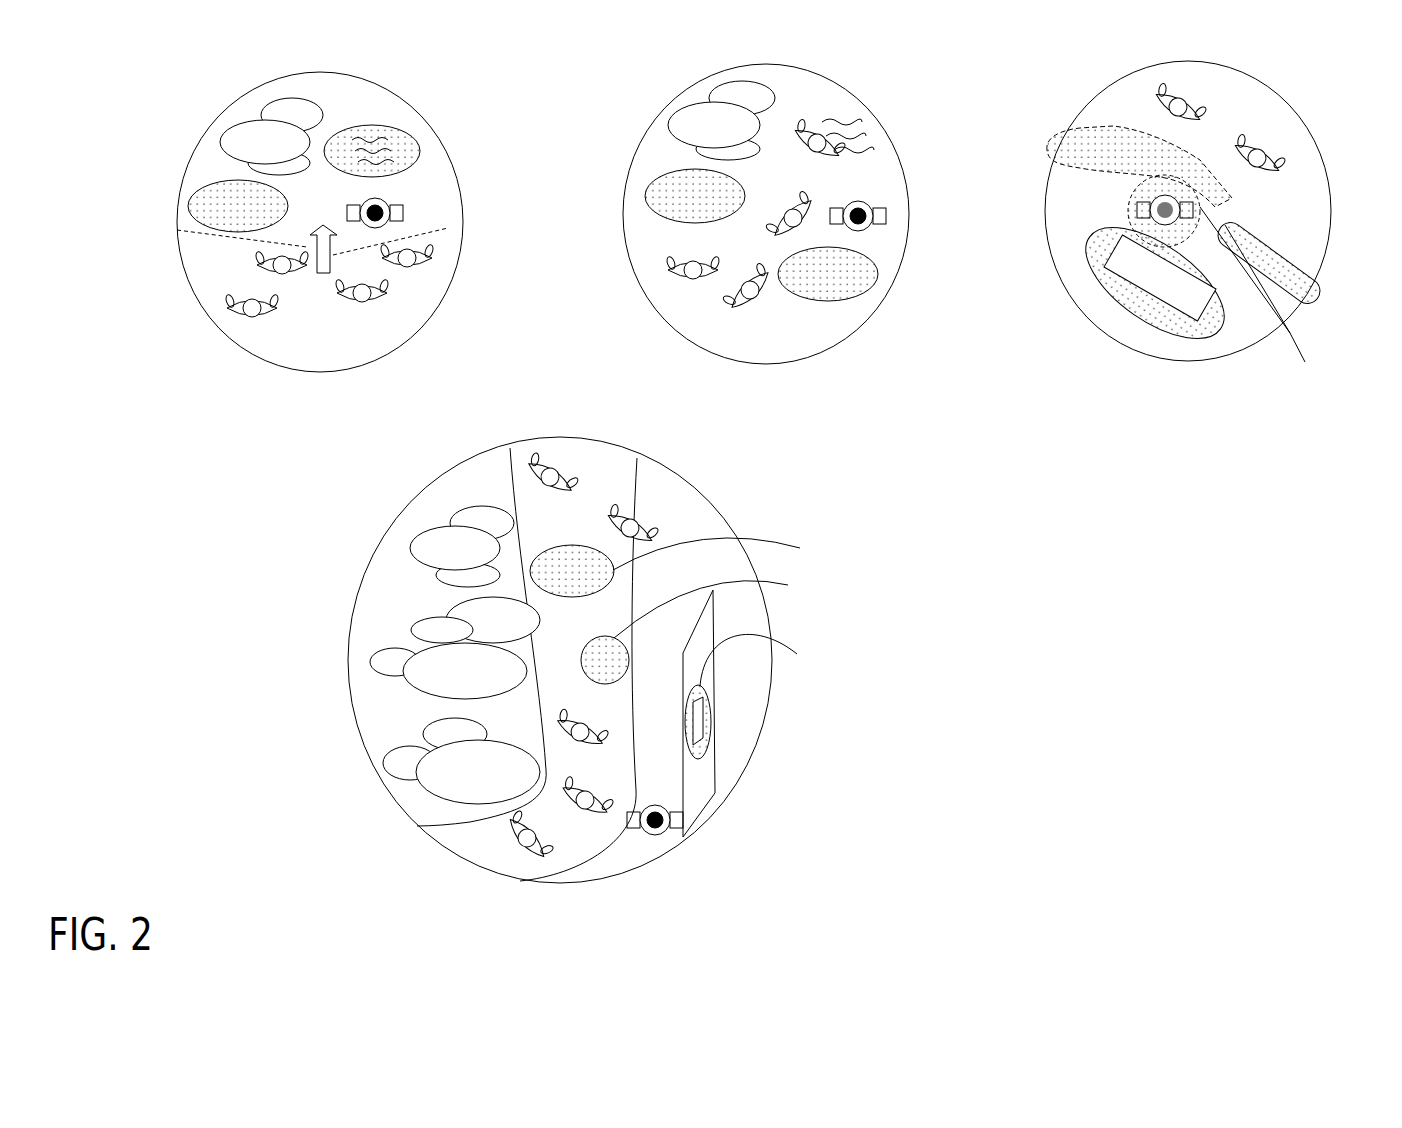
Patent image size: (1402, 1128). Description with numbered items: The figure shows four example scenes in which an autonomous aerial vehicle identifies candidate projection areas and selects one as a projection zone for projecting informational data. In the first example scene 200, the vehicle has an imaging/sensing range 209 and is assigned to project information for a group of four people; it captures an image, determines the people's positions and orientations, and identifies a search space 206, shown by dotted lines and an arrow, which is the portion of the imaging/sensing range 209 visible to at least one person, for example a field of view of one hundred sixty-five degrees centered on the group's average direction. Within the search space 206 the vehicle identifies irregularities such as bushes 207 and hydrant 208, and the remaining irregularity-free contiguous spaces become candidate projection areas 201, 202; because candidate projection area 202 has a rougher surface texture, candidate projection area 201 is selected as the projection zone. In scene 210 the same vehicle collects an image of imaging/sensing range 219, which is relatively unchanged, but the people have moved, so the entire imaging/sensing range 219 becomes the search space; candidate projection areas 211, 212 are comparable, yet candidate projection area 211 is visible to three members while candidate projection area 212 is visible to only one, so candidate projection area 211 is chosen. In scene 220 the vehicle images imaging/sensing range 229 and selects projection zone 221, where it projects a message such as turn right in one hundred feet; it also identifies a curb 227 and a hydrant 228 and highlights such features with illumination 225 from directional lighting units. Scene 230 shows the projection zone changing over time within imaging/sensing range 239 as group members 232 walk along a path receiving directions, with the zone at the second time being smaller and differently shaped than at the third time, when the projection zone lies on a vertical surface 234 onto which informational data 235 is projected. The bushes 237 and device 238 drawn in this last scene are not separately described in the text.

The first example scene 200 is at (265, 254).
The candidate projection area 201 is at (188, 207).
The candidate projection area 202 is at (404, 127).
The search space 206 is at (325, 273).
The bushes 207 is at (232, 127).
The hydrant 208 is at (403, 208).
The imaging/sensing range 209 is at (183, 283).
The scene 210 is at (734, 236).
The candidate projection area 211 is at (643, 197).
The candidate projection area 212 is at (873, 283).
The imaging/sensing range 219 is at (673, 333).
The scene 220 is at (1173, 239).
The projection zone 221 is at (1225, 422).
The illumination 225 is at (1073, 168).
The curb 227 is at (1277, 268).
The hydrant 228 is at (1140, 212).
The imaging/sensing range 229 is at (1067, 128).
The scene 230 is at (602, 687).
The group members 232 is at (625, 515).
The vertical surface 234 is at (717, 770).
The informational data 235 is at (704, 722).
The trees 237 is at (440, 620).
The projection device 238 is at (662, 833).
The imaging/sensing range 239 is at (400, 812).